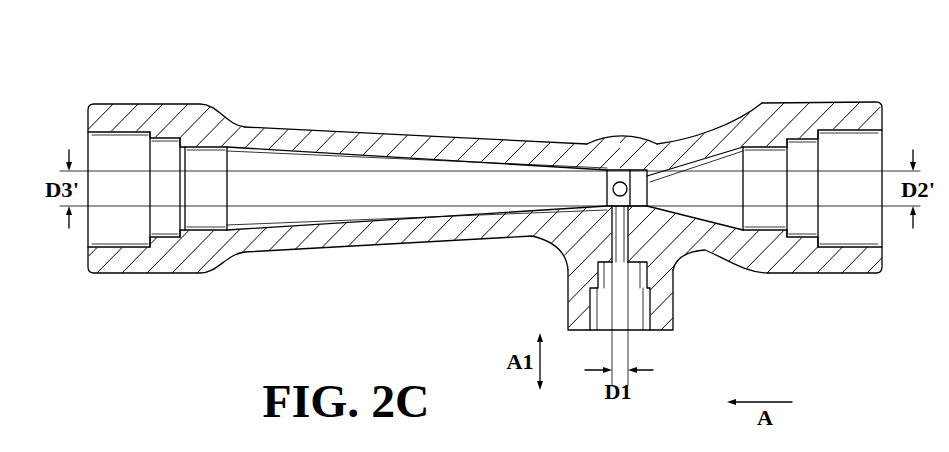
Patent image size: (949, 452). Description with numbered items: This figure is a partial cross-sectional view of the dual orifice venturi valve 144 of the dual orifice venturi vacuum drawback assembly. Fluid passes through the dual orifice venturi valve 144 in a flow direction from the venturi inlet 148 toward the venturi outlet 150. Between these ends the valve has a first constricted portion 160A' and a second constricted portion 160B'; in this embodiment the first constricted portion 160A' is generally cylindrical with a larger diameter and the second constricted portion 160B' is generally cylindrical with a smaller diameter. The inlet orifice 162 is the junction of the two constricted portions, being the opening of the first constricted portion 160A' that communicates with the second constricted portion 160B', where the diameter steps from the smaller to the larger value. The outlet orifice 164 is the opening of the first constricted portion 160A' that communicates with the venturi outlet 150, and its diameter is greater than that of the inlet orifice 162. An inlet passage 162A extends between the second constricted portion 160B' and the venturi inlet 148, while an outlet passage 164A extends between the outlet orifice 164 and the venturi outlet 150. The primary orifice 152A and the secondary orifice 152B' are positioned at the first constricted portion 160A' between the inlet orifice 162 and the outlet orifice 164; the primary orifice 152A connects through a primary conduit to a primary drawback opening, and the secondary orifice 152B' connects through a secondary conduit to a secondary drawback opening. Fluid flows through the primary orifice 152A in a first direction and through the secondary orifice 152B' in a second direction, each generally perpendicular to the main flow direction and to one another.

The dual orifice venturi valve 144 is at (336, 74).
The venturi inlet 148 is at (882, 244).
The venturi outlet 150 is at (88, 242).
The primary orifice 152A is at (673, 284).
The secondary orifice 152B' is at (618, 139).
The first constricted portion 160A' is at (417, 155).
The second constricted portion 160B' is at (694, 157).
The inlet orifice 162 is at (648, 183).
The inlet passage 162A is at (747, 165).
The outlet orifice 164 is at (606, 186).
The outlet passage 164A is at (270, 197).